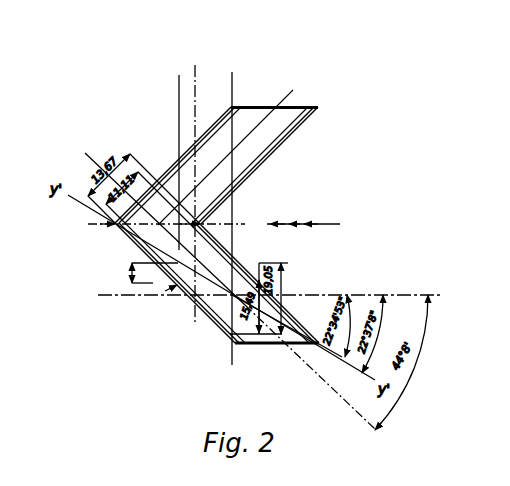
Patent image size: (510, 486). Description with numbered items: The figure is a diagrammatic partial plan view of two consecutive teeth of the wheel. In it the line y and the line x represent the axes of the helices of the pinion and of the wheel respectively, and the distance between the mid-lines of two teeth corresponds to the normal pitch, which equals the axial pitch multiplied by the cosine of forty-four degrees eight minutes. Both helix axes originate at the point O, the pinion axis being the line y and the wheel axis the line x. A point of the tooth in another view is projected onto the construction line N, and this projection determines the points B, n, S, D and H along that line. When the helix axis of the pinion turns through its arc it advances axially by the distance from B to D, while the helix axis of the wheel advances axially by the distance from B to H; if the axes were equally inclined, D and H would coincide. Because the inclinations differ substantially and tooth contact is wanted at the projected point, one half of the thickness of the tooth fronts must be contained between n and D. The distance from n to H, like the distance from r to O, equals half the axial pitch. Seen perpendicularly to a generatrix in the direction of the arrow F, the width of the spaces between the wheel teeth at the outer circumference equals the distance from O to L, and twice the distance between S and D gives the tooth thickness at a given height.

The axis of the helix of the wheel x is at (227, 292).
The axis of the helix of the pinion y is at (209, 287).
The construction line N is at (266, 296).
The origin point of the helix axes O is at (239, 186).
The space-width end point L is at (236, 332).
The wheel-helix advance point H is at (193, 169).
The pinion-helix advance point D is at (161, 270).
The tooth thickness point S is at (256, 284).
The base projection point B is at (187, 198).
The half-pitch point r is at (232, 338).
The front-thickness limit point n is at (164, 292).
The viewing direction arrow F is at (293, 225).